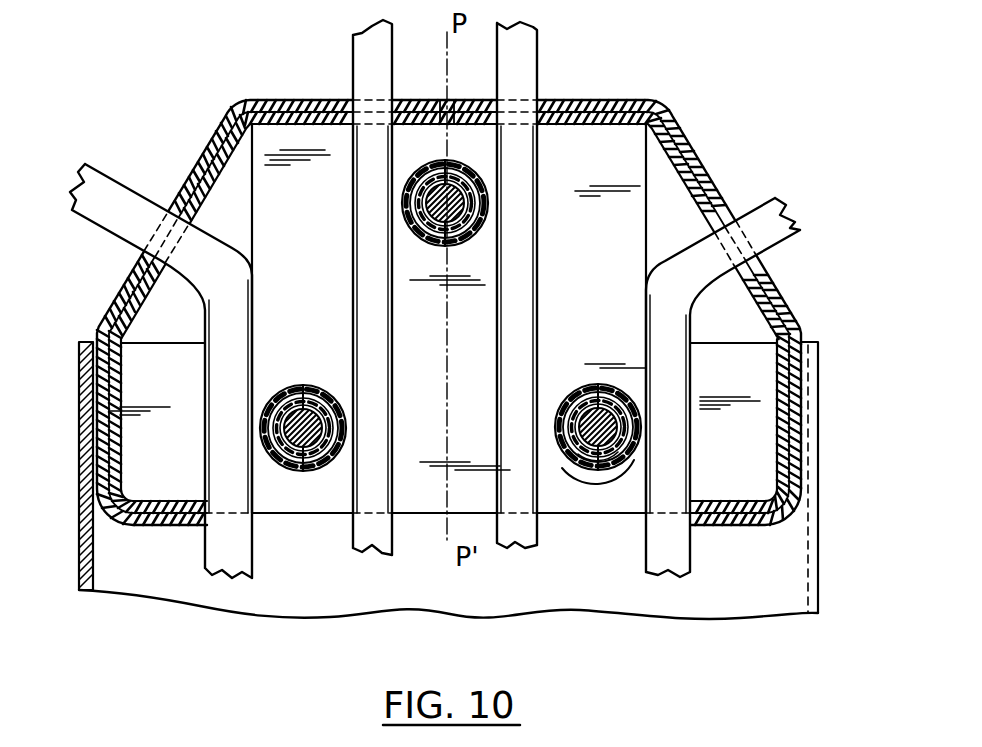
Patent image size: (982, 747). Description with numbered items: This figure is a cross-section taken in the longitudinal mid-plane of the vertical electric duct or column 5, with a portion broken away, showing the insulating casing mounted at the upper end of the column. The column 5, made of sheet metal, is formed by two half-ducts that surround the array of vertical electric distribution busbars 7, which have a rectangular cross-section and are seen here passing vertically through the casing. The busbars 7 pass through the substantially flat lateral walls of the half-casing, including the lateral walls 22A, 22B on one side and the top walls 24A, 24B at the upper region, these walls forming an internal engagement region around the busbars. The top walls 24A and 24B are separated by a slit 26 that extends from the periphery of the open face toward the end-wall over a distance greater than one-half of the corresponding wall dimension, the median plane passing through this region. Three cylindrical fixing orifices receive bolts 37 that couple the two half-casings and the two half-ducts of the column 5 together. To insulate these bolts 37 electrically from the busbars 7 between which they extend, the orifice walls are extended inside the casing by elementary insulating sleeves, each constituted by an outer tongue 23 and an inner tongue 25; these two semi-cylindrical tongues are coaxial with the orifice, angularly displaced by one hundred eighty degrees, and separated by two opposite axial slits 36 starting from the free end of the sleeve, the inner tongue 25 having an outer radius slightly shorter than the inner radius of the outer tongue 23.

The vertical electric duct or column 5 is at (85, 520).
The vertical electric distribution busbars 7 is at (527, 57).
The lateral wall 22A is at (206, 147).
The lateral wall 22B is at (188, 177).
The outer tongue 23 is at (565, 470).
The top wall 24A is at (703, 188).
The top wall 24B is at (692, 150).
The inner tongue 25 is at (580, 470).
The slit 26 is at (445, 100).
The axial slits 36 is at (597, 385).
The bolts 37 is at (637, 403).